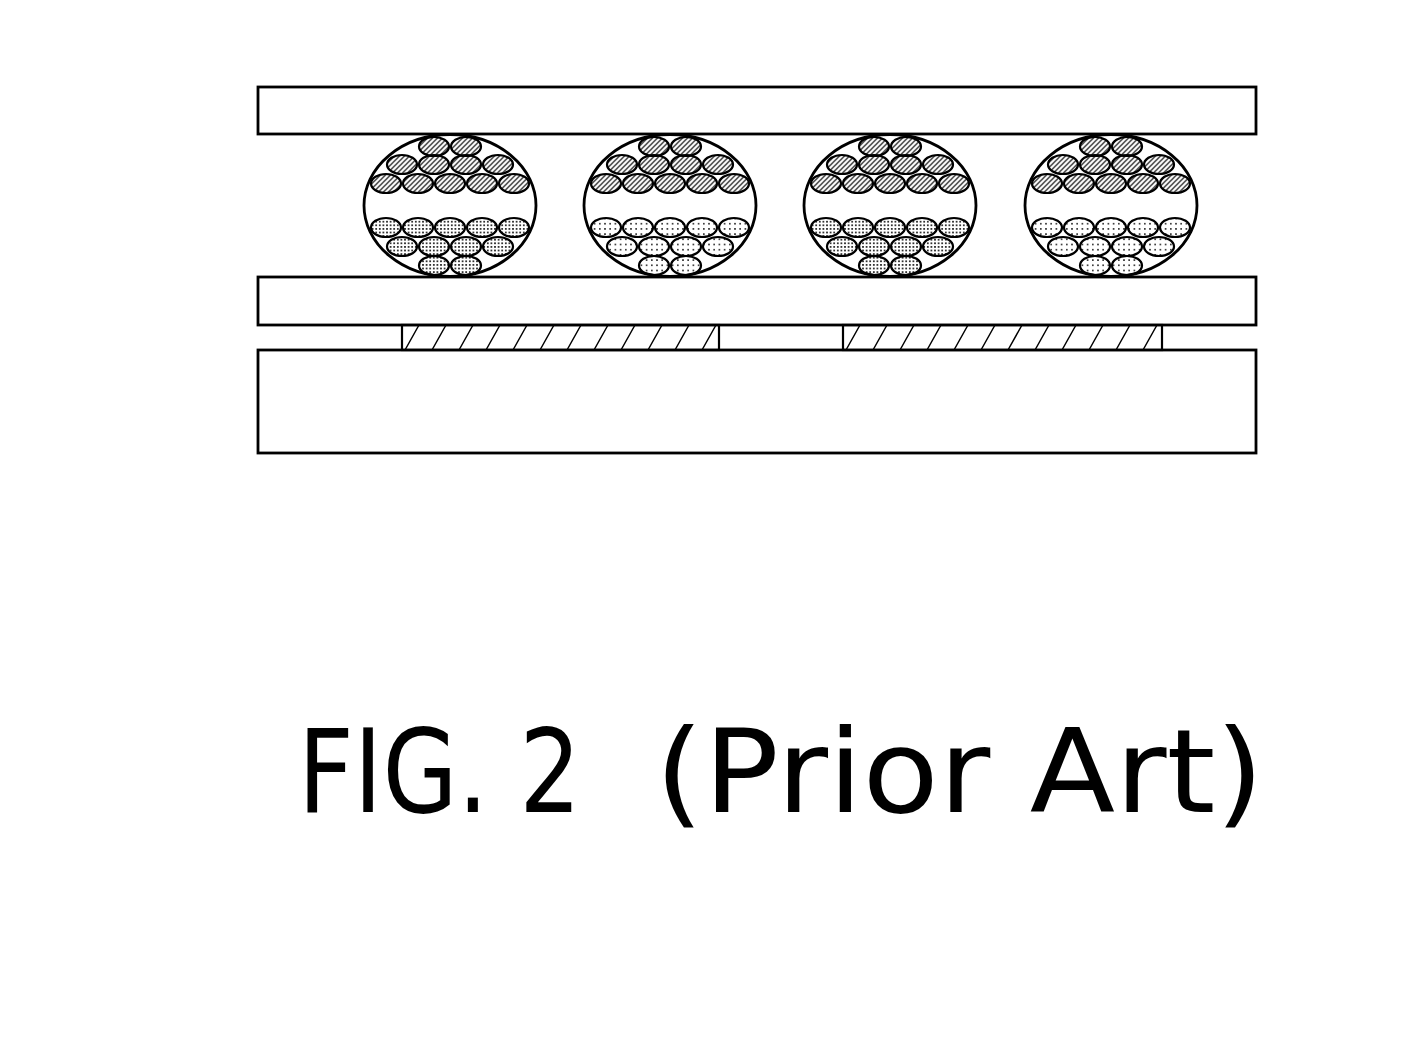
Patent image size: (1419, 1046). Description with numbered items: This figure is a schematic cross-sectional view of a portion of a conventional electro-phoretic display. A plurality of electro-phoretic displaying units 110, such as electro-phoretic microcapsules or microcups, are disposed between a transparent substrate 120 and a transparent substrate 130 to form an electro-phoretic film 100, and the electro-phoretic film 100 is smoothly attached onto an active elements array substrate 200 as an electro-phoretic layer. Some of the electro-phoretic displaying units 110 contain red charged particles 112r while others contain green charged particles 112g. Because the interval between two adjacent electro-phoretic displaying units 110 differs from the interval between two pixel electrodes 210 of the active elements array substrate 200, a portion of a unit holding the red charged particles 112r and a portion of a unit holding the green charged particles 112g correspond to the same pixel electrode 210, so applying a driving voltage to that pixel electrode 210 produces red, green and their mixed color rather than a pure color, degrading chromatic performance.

The electro-phoretic film 100 is at (227, 85).
The electro-phoretic displaying unit 110 is at (849, 347).
The red charged particles 112r is at (877, 268).
The green charged particles 112g is at (1128, 270).
The transparent substrate 120 is at (1240, 305).
The transparent substrate 130 is at (1241, 117).
The active elements array substrate 200 is at (1240, 407).
The pixel electrode 210 is at (645, 342).